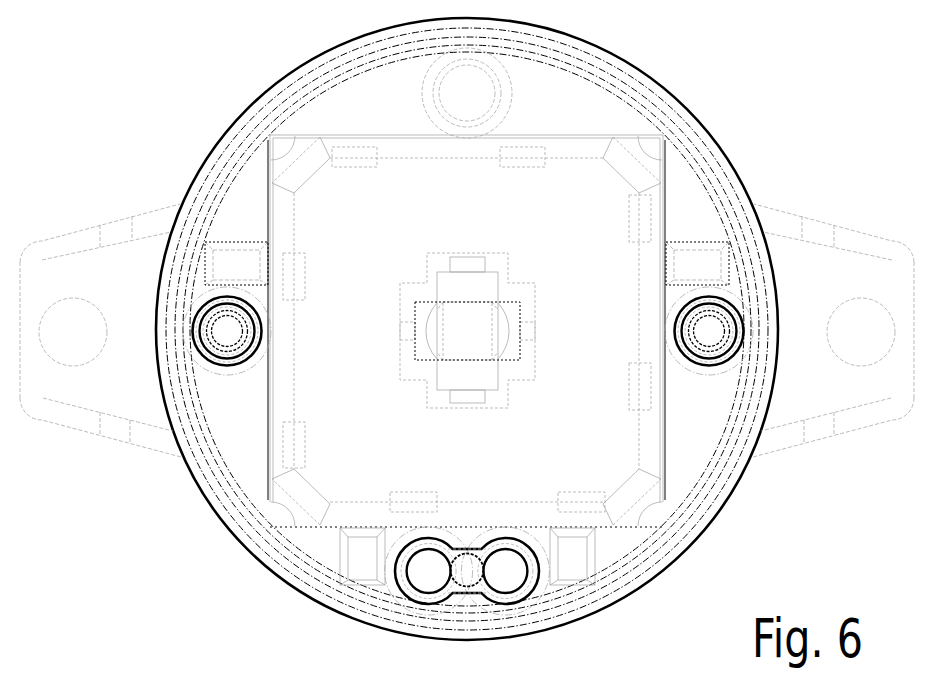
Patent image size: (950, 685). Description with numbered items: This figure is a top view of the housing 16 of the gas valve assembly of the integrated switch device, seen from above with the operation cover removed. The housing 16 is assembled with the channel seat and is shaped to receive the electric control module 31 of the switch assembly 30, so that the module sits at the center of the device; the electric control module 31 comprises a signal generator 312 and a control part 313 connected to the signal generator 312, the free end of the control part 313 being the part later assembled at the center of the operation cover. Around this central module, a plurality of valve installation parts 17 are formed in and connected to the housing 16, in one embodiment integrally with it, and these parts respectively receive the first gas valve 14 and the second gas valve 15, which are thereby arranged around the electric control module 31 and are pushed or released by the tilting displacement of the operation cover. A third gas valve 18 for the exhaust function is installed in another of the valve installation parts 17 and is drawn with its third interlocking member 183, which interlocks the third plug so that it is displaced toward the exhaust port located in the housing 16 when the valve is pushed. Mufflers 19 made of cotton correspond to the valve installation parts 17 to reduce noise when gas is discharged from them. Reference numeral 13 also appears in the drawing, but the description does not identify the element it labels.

The housing body 13 is at (667, 497).
The first gas valve 14 is at (218, 352).
The second gas valve 15 is at (713, 350).
The housing 16 is at (712, 131).
The valve installation parts 17 is at (735, 283).
The third gas valve 18 is at (385, 578).
The third interlocking member 183 is at (463, 567).
The mufflers 19 is at (577, 567).
The switch assembly 30 is at (582, 140).
The electric control module 31 is at (252, 39).
The signal generator 312 is at (337, 203).
The control part 313 is at (452, 332).